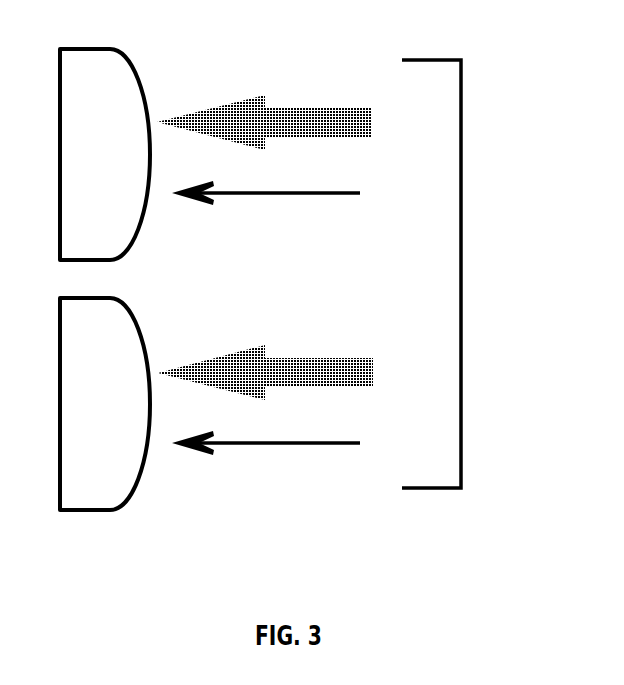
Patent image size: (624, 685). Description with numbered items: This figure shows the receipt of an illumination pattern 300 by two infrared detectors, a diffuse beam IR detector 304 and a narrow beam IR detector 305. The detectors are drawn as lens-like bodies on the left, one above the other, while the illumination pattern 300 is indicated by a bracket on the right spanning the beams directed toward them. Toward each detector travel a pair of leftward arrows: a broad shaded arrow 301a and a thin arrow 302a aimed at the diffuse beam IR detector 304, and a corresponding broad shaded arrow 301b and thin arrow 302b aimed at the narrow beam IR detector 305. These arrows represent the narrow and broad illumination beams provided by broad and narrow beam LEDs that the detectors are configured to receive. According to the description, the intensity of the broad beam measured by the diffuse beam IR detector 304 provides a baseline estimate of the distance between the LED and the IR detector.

The illumination pattern 300 is at (519, 274).
The first light beam 301a is at (290, 107).
The second light beam 301b is at (302, 353).
The first signal / path 302a is at (265, 193).
The second signal / path 302b is at (245, 445).
The diffuse beam IR detector 304 is at (81, 162).
The narrow beam IR detector 305 is at (81, 416).